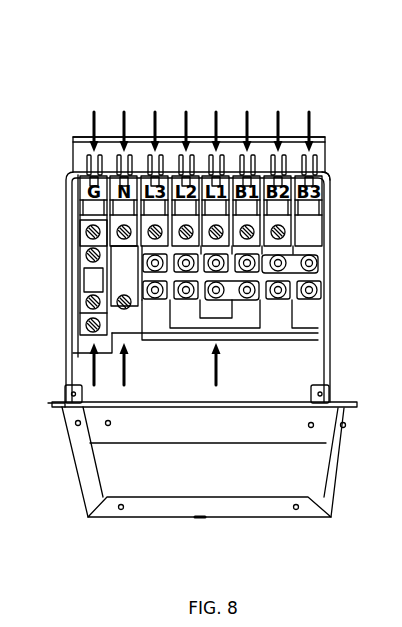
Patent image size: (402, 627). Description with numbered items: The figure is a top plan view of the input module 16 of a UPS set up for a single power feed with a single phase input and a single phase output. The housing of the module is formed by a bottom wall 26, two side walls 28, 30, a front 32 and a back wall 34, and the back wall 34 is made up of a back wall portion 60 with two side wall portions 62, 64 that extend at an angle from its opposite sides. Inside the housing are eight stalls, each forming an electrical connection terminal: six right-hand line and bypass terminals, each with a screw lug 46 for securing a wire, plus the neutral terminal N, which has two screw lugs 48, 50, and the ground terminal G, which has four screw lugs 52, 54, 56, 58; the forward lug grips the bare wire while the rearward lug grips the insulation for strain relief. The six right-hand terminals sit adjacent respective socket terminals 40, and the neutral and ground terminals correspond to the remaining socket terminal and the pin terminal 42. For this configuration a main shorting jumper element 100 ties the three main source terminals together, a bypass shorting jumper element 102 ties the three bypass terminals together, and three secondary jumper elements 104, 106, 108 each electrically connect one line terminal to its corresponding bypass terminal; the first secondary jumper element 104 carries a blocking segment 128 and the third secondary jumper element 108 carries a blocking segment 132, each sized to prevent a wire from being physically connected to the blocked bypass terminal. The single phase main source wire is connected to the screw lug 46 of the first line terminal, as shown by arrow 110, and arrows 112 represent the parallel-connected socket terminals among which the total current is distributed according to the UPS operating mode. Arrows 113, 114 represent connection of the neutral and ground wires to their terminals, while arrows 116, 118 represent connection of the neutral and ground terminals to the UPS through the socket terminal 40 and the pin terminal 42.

The input module 16 is at (72, 100).
The bottom wall 26 is at (275, 372).
The side wall 28 is at (66, 213).
The side wall 30 is at (330, 186).
The front 32 is at (217, 150).
The back wall 34 is at (147, 517).
The socket terminal 40 is at (283, 158).
The pin terminal 42 is at (98, 153).
The screw lug 46 is at (155, 232).
The screw lug 48 is at (118, 230).
The screw lug 50 is at (128, 312).
The screw lug 52 is at (86, 236).
The screw lug 54 is at (86, 258).
The screw lug 56 is at (86, 305).
The screw lug 58 is at (86, 328).
The back wall portion 60 is at (268, 517).
The side wall portion 62 is at (73, 467).
The side wall portion 64 is at (345, 467).
The main shorting jumper element 100 is at (145, 268).
The bypass shorting jumper element 102 is at (318, 292).
The first secondary jumper element 104 is at (232, 300).
The second secondary jumper element 106 is at (288, 305).
The third secondary jumper element 108 is at (243, 337).
The arrow 110 is at (202, 345).
The arrows 112 is at (155, 150).
The arrow 113 is at (102, 350).
The arrow 114 is at (70, 440).
The arrow 116 is at (130, 112).
The arrow 118 is at (88, 122).
The blocking segment 128 is at (272, 300).
The blocking segment 132 is at (322, 248).